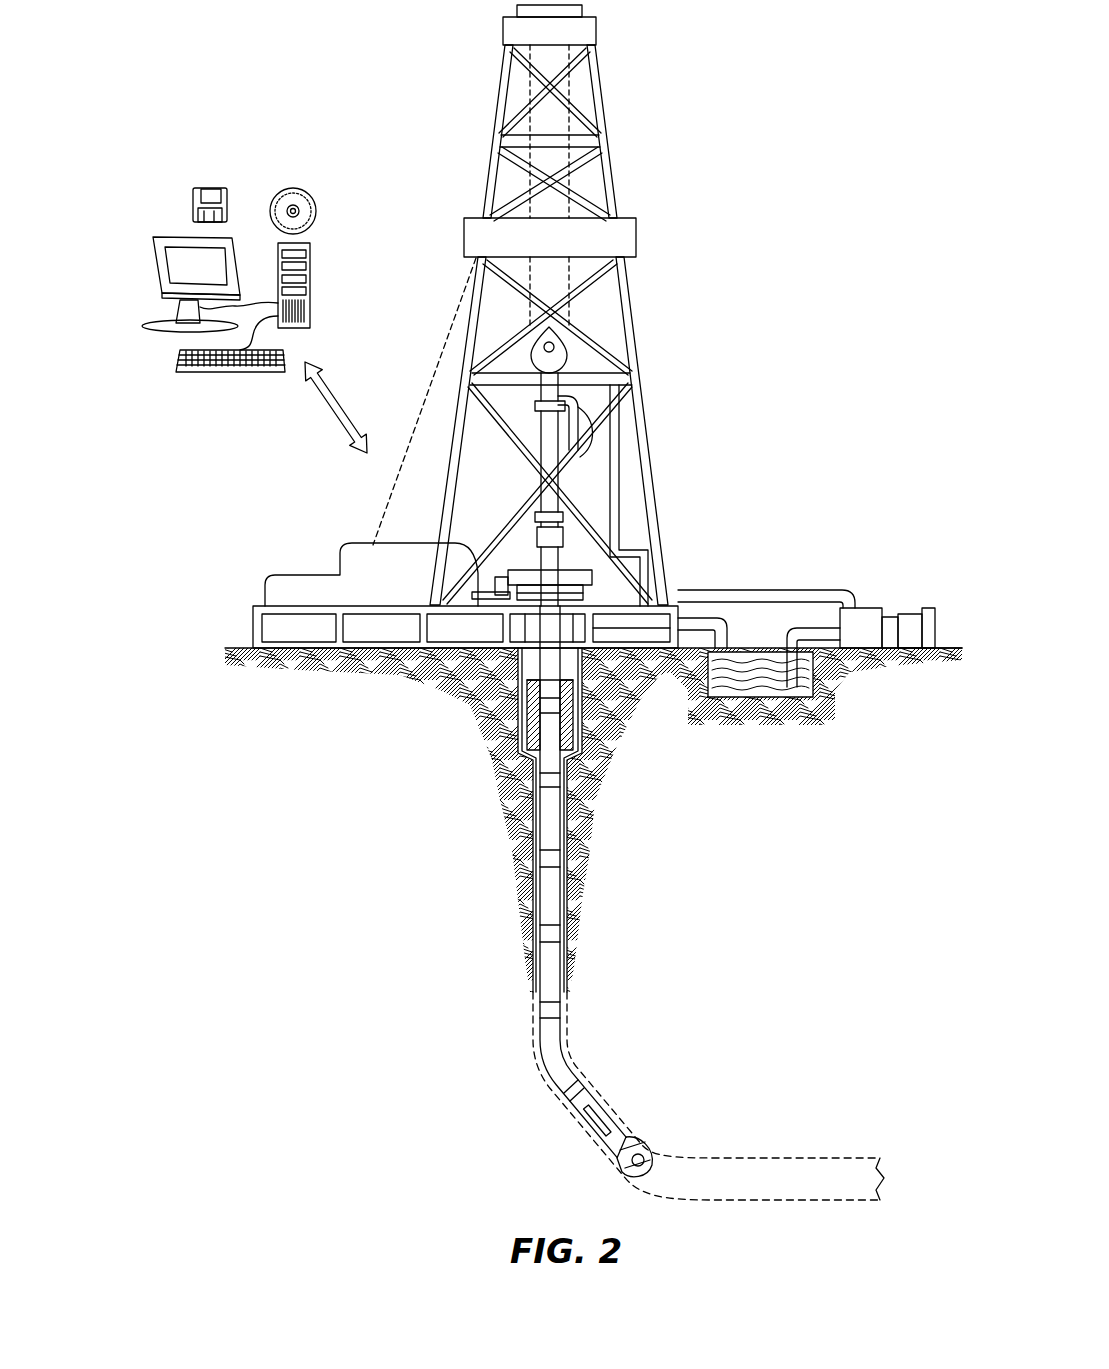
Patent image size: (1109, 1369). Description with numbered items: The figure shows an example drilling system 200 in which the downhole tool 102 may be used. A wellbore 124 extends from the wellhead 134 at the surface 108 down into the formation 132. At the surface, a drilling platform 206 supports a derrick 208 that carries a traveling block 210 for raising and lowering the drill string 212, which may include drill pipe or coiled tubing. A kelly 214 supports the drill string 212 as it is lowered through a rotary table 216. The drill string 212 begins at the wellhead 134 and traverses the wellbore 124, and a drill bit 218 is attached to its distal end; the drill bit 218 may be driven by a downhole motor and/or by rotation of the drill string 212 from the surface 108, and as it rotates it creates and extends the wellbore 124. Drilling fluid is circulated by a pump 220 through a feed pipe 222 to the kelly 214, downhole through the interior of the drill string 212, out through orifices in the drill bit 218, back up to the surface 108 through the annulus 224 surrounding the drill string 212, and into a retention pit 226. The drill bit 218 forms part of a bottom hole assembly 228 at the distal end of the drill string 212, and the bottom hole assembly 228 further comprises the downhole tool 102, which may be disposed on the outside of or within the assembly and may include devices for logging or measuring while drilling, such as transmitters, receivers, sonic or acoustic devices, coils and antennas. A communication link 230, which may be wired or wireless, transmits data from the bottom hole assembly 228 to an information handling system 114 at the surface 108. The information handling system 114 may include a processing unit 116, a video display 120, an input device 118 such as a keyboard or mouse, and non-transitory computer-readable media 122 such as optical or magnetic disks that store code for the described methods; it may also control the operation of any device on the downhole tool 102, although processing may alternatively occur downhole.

The drilling system 200 is at (868, 110).
The derrick 208 is at (610, 158).
The traveling block 210 is at (580, 348).
The kelly 214 is at (550, 430).
The rotary table 216 is at (585, 568).
The wellhead 134 is at (600, 593).
The drilling platform 206 is at (253, 626).
The feed pipe 222 is at (790, 590).
The pump 220 is at (866, 608).
The surface 108 is at (946, 648).
The retention pit 226 is at (757, 690).
The annulus 224 is at (533, 855).
The drill string 212 is at (562, 835).
The wellbore 124 is at (568, 852).
The formation 132 is at (800, 945).
The downhole tool 102 is at (596, 1118).
The drill bit 218 is at (650, 1146).
The bottom hole assembly 228 is at (556, 1114).
The information handling system 114 is at (155, 172).
The non-transitory computer-readable media 122 is at (292, 190).
The video display 120 is at (157, 275).
The processing unit 116 is at (311, 256).
The input device 118 is at (190, 372).
The communication link 230 is at (323, 415).